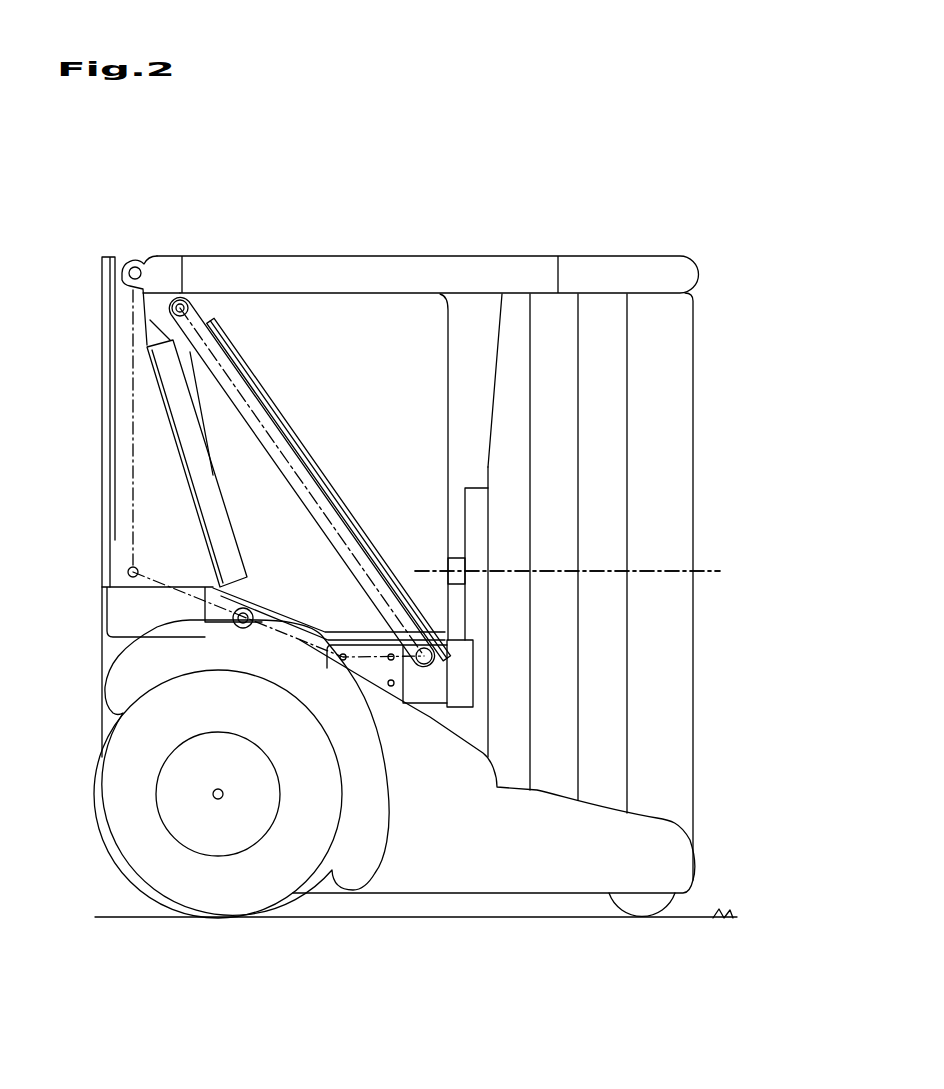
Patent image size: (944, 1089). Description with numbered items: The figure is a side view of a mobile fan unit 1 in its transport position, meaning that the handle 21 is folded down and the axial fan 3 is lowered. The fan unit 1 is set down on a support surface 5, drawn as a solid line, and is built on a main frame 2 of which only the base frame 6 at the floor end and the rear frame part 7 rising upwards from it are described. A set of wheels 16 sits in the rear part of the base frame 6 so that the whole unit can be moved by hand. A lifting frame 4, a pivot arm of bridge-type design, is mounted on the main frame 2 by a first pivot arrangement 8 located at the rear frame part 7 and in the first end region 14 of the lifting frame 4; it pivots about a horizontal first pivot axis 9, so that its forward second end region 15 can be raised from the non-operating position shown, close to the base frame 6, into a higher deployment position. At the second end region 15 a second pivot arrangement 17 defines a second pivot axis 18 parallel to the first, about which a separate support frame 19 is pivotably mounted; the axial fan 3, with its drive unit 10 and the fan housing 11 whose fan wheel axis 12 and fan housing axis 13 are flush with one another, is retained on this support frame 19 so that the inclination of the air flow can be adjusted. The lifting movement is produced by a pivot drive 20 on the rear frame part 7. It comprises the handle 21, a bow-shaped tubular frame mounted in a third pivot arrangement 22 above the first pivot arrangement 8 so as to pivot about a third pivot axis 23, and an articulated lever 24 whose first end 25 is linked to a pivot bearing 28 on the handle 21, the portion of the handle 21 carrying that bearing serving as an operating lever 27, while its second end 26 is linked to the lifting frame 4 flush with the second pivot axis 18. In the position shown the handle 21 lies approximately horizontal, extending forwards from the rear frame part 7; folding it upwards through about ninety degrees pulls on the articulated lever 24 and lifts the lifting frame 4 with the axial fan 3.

The fan unit 1 is at (697, 143).
The main frame 2 is at (85, 703).
The axial fan 3 is at (703, 318).
The lifting frame 4 is at (373, 670).
The support surface 5 is at (733, 920).
The base frame 6 is at (498, 863).
The rear frame part 7 is at (120, 395).
The first pivot arrangement 8 is at (118, 560).
The first pivot axis 9 is at (128, 574).
The drive unit 10 is at (340, 322).
The fan housing 11 is at (668, 390).
The fan wheel axis 12 is at (653, 570).
The fan housing axis 13 is at (693, 532).
The first end region 14 is at (125, 592).
The second end region 15 is at (470, 713).
The set of wheels 16 is at (210, 893).
The second pivot arrangement 17 is at (445, 672).
The second pivot axis 18 is at (443, 660).
The support frame 19 is at (460, 660).
The pivot drive 20 is at (350, 200).
The handle 21 is at (492, 257).
The third pivot arrangement 22 is at (125, 257).
The third pivot axis 23 is at (128, 273).
The articulated lever 24 is at (322, 473).
The first end 25 is at (217, 307).
The second end 26 is at (428, 683).
The operating lever 27 is at (160, 293).
The pivot bearing 28 is at (184, 292).